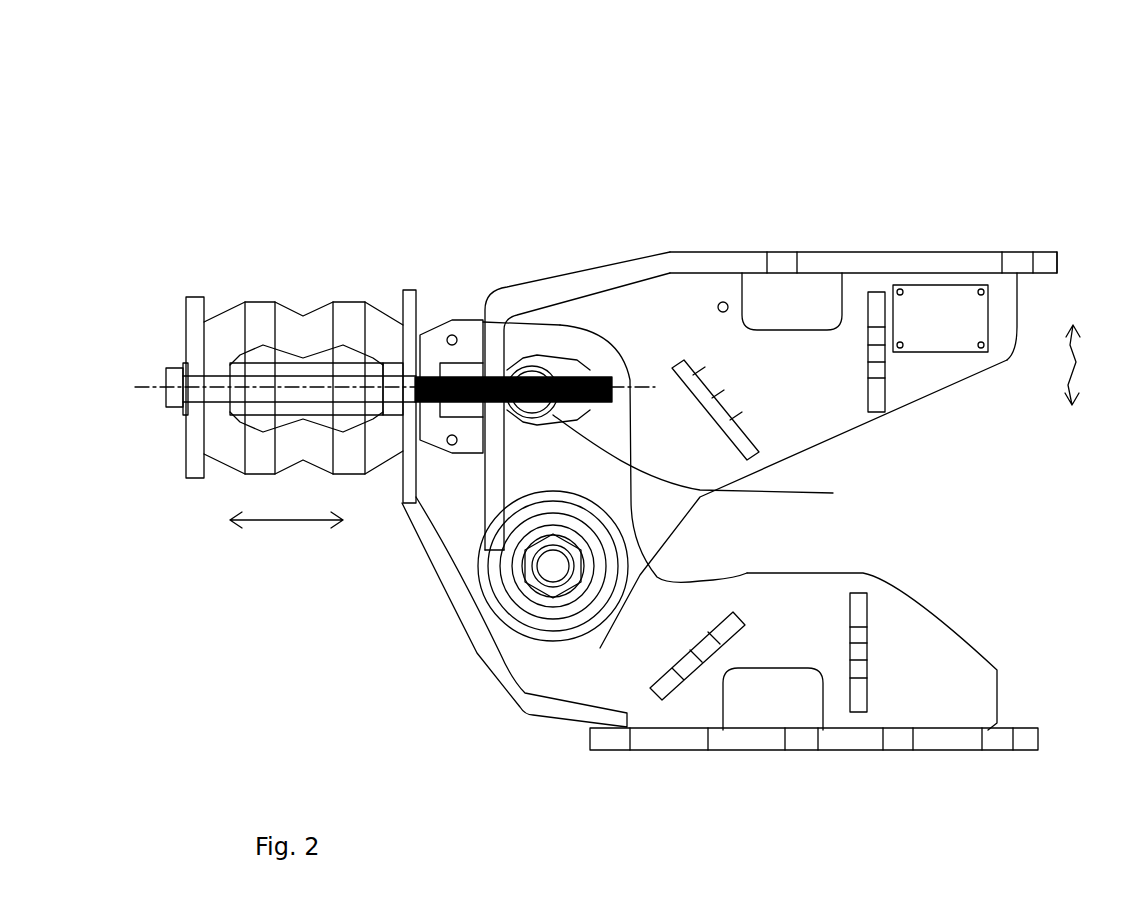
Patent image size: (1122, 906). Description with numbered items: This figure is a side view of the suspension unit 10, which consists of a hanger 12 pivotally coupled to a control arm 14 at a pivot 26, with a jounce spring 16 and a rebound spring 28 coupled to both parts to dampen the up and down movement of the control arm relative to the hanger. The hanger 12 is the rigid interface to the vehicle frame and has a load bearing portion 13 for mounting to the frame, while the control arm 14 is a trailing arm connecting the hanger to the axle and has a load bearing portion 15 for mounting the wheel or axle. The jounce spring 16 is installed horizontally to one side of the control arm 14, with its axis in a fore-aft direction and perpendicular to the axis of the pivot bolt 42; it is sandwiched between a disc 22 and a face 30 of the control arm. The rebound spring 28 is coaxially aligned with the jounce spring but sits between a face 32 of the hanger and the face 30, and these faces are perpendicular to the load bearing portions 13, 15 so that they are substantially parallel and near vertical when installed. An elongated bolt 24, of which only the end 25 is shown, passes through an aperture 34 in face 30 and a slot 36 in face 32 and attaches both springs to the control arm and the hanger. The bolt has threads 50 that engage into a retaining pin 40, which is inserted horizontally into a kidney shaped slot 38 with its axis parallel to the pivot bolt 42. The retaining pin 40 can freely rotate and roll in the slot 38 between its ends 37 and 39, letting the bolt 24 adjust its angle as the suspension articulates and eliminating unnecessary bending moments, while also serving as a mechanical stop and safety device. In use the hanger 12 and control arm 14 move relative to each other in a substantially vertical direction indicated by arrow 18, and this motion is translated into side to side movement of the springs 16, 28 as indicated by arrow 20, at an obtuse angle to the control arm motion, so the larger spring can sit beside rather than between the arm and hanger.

The suspension unit 10 is at (859, 105).
The hanger 12 is at (990, 290).
The load bearing portion 13 is at (870, 255).
The control arm 14 is at (1000, 712).
The load bearing portion 15 is at (940, 752).
The jounce spring 16 is at (287, 305).
The arrow 18 is at (1093, 365).
The arrow 20 is at (287, 522).
The disc 22 is at (190, 297).
The elongated bolt 24 is at (507, 470).
The end 25 is at (168, 380).
The pivot 26 is at (553, 566).
The rebound spring 28 is at (465, 332).
The face 30 is at (413, 297).
The face 32 is at (498, 377).
The aperture 34 is at (403, 507).
The slot 36 is at (557, 377).
The end 37 is at (483, 455).
The kidney shaped slot 38 is at (600, 370).
The end 39 is at (610, 353).
The retaining pin 40 is at (833, 493).
The pivot bolt 42 is at (600, 648).
The threads 50 is at (570, 360).